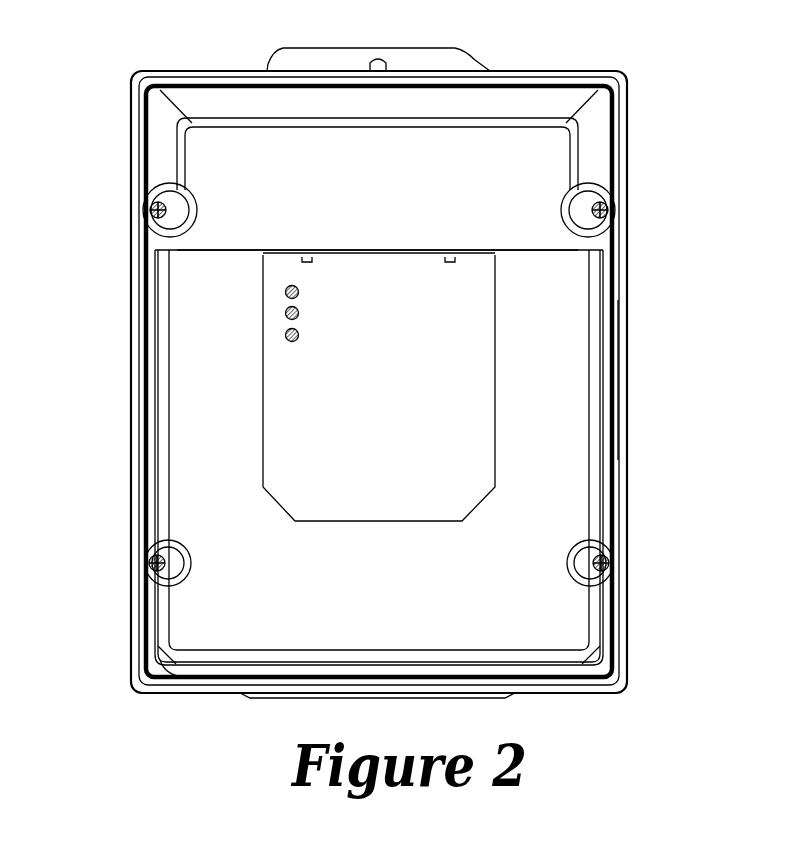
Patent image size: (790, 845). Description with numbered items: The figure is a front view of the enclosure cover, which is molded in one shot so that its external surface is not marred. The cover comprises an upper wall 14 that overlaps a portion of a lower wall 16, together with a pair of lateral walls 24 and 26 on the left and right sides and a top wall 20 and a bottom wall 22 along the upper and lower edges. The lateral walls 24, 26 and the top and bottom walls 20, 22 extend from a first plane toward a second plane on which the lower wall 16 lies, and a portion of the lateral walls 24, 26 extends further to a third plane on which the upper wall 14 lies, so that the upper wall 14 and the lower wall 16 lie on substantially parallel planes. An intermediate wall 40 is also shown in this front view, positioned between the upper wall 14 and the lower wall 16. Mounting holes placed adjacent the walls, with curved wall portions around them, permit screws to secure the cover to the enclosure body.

The upper wall 14 is at (222, 165).
The lower wall 16 is at (203, 503).
The top wall 20 is at (510, 105).
The bottom wall 22 is at (150, 342).
The lateral wall 24 is at (183, 675).
The lateral wall 26 is at (600, 390).
The intermediate wall 40 is at (533, 253).